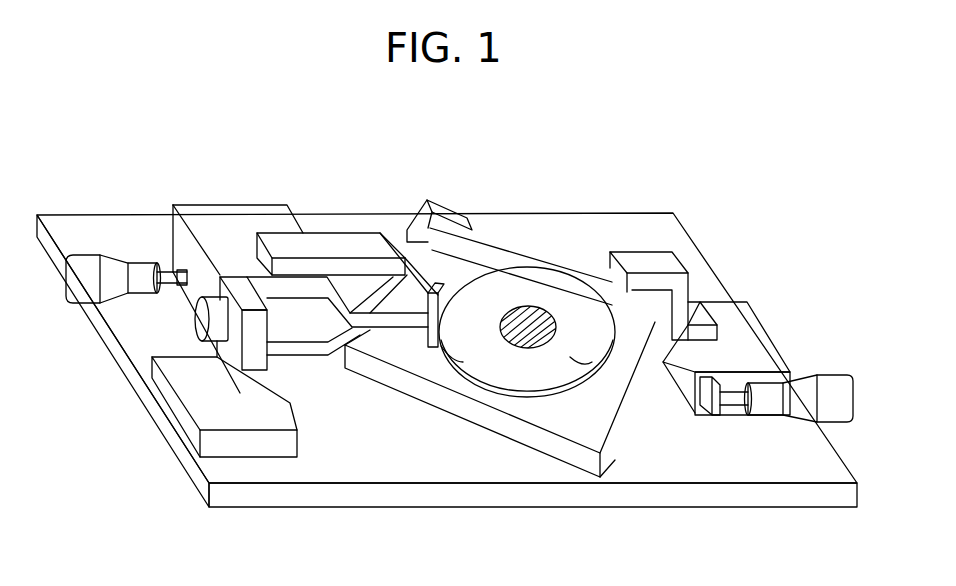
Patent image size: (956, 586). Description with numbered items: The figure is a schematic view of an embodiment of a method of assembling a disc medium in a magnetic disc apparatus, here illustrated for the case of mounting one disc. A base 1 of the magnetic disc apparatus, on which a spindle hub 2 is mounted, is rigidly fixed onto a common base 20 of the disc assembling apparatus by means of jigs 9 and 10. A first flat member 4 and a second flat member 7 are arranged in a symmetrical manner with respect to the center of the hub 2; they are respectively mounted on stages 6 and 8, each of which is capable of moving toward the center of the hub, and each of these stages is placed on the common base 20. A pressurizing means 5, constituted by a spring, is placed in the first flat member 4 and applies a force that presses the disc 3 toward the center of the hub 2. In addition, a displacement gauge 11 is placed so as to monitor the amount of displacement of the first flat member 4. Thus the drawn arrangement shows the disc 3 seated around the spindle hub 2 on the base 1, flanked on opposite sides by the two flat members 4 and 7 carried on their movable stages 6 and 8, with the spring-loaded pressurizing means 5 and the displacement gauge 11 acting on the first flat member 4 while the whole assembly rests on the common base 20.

The base 1 is at (488, 408).
The spindle hub 2 is at (528, 313).
The disc 3 is at (460, 357).
The first flat member 4 is at (432, 345).
The pressurizing means 5 is at (203, 213).
The stage 6 is at (173, 262).
The second flat member 7 is at (617, 276).
The stage 8 is at (752, 332).
The jig 9 is at (618, 440).
The jig 10 is at (427, 200).
The displacement gauge 11 is at (320, 330).
The common base 20 is at (730, 468).